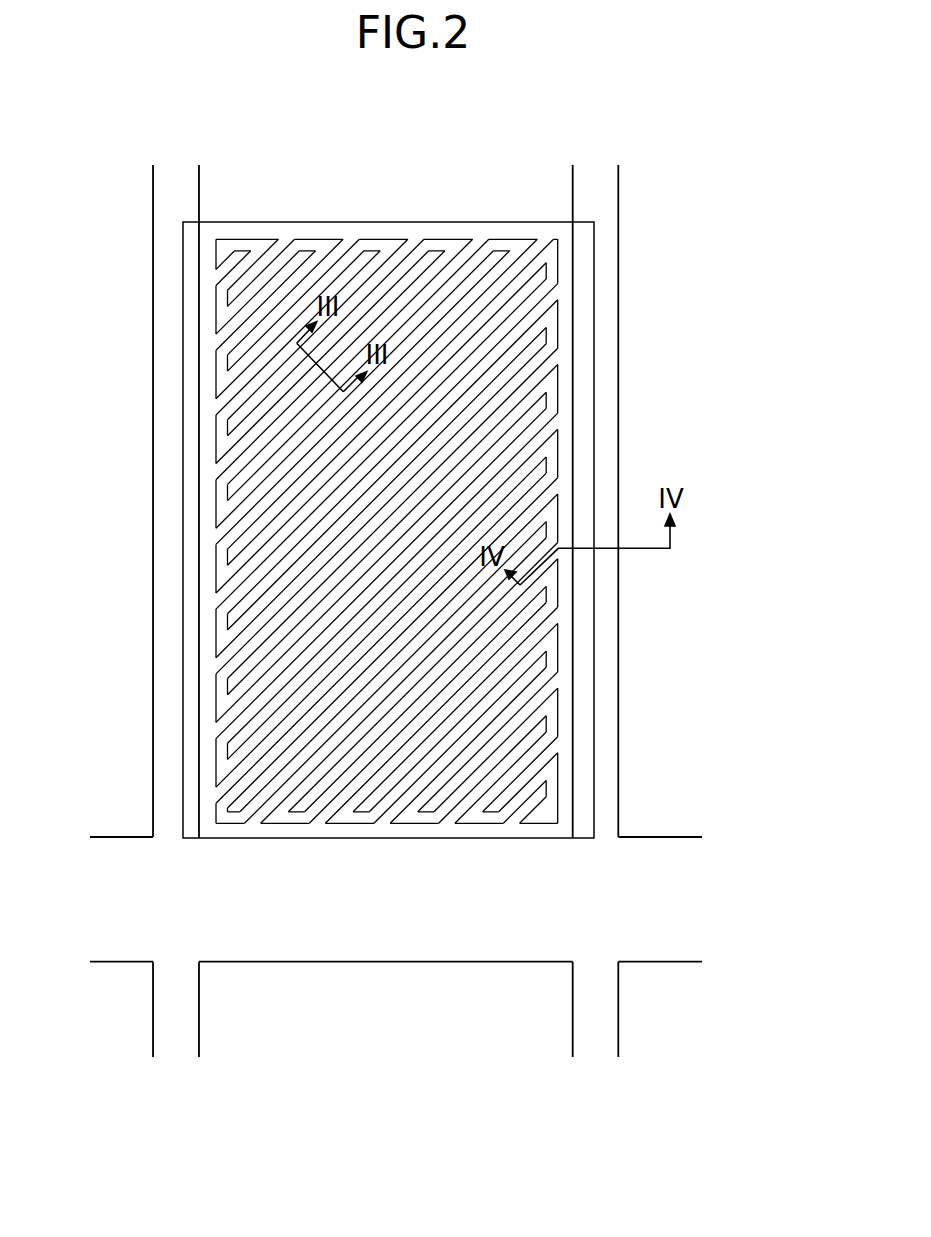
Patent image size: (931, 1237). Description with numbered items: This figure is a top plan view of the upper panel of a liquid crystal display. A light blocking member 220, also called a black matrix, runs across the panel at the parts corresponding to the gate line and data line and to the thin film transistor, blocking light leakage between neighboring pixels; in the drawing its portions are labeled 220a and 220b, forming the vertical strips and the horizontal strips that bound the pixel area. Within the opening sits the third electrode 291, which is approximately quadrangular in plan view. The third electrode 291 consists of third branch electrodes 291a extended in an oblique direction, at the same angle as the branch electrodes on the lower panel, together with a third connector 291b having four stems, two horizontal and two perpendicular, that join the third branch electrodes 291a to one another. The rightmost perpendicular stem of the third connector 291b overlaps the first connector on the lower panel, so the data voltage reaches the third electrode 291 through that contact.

The third electrode 291 is at (489, 530).
The third branch electrode 291a is at (432, 297).
The third connector 291b is at (595, 392).
The light blocking member 220 is at (422, 626).
The horizontal conductive line portion 220a is at (665, 838).
The vertical conductive line portion 220b is at (618, 667).